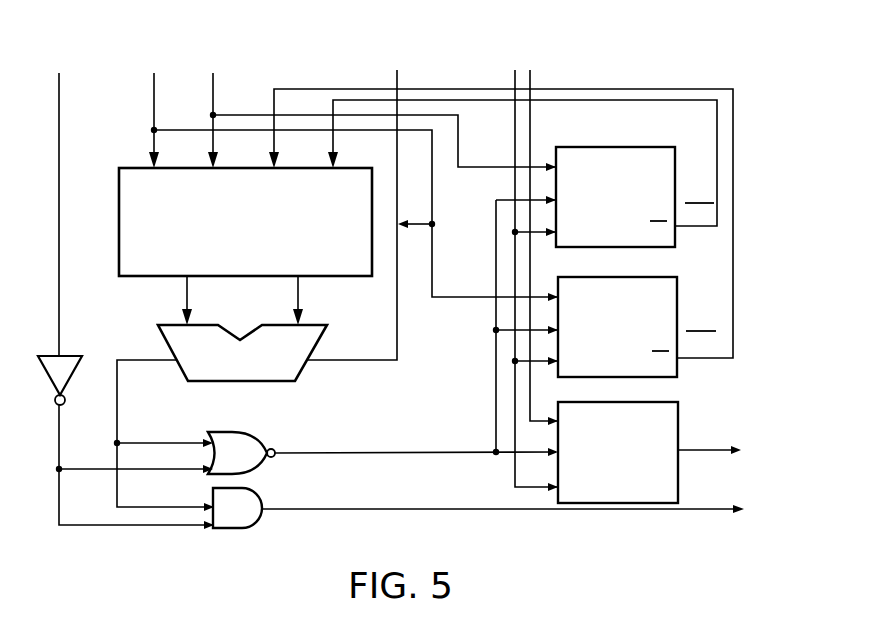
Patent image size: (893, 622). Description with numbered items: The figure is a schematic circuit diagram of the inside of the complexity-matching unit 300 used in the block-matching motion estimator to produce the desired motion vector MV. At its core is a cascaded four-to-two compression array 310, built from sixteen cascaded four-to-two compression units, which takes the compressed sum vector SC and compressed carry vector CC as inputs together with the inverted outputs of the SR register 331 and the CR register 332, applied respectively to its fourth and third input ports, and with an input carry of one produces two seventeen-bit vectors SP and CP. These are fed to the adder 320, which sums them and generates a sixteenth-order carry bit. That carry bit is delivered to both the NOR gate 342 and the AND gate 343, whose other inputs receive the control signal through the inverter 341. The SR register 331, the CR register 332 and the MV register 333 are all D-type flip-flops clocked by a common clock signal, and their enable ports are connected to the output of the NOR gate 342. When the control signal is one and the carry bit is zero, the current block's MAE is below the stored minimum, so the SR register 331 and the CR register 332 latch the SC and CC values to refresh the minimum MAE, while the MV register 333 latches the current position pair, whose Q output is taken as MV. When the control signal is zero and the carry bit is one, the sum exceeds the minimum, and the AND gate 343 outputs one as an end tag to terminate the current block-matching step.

The complexity-matching unit 300 is at (806, 110).
The cascaded 4:2 compression array 310 is at (127, 168).
The adder 320 is at (268, 383).
The SR register 331 is at (627, 147).
The CR register 332 is at (633, 277).
The MV register 333 is at (660, 402).
The inverter 341 is at (63, 355).
The NOR gate 342 is at (266, 471).
The AND gate 343 is at (258, 526).